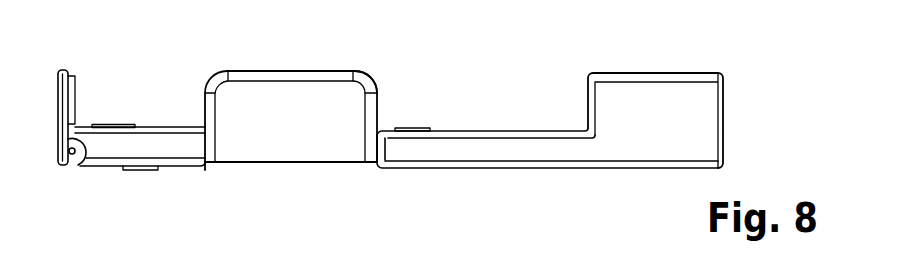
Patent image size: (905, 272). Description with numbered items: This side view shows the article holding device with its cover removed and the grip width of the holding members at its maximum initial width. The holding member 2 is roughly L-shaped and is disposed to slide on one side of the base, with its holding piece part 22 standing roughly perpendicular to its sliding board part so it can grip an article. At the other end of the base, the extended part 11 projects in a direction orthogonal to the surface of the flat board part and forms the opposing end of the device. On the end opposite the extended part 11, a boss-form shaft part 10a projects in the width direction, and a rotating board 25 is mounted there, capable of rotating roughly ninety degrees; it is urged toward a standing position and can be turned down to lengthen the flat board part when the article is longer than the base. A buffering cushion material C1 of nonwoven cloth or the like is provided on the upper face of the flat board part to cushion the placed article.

The holding member 2 is at (293, 70).
The extended part 11 is at (661, 72).
The holding piece part 22 is at (364, 78).
The rotating board 25 is at (63, 70).
The shaft part 10a is at (64, 166).
The buffering cushion material C1 is at (112, 125).